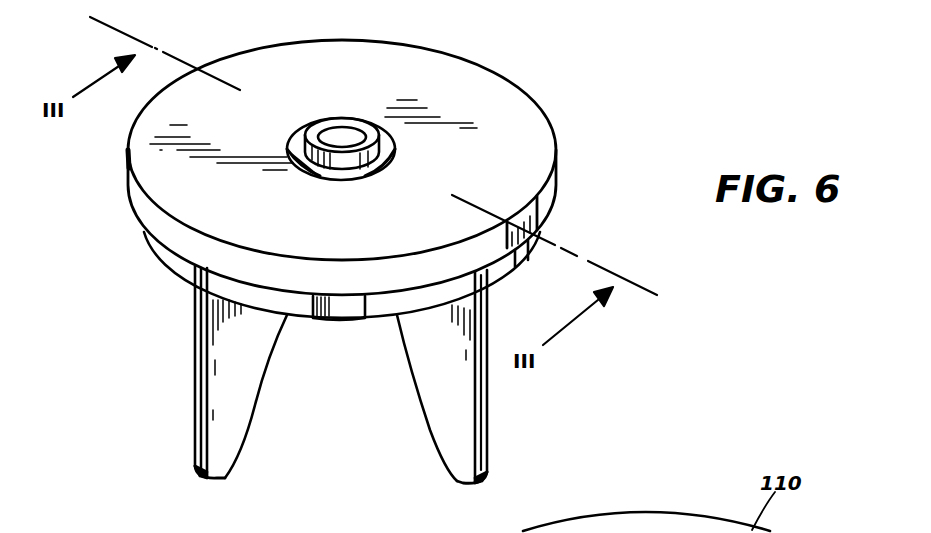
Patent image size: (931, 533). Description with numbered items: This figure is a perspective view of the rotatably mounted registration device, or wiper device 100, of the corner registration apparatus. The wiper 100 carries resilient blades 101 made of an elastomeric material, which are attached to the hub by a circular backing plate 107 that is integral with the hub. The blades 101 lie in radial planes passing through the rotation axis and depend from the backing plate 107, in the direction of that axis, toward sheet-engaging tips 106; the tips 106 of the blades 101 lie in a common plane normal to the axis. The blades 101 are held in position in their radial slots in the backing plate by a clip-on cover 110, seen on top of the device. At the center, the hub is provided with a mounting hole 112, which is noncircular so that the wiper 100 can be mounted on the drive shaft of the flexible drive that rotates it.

The wiper device 100 is at (565, 133).
The clip-on cover 110 is at (505, 100).
The mounting hole 112 is at (352, 132).
The circular backing plate 107 is at (182, 274).
The resilient blades 101 is at (250, 397).
The sheet-engaging tips 106 is at (225, 478).